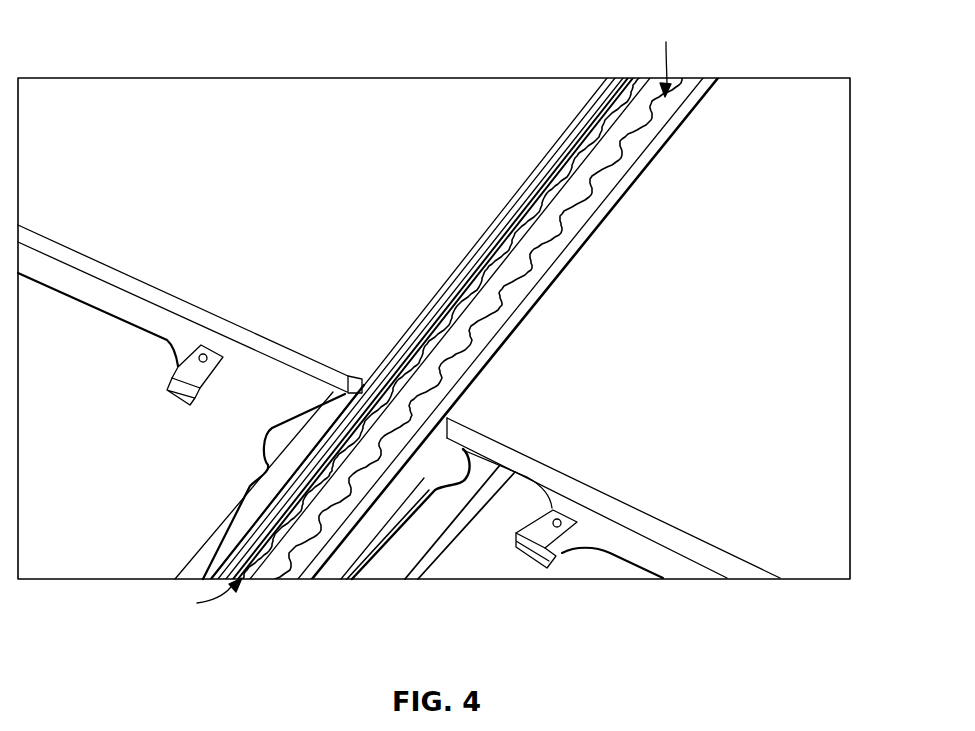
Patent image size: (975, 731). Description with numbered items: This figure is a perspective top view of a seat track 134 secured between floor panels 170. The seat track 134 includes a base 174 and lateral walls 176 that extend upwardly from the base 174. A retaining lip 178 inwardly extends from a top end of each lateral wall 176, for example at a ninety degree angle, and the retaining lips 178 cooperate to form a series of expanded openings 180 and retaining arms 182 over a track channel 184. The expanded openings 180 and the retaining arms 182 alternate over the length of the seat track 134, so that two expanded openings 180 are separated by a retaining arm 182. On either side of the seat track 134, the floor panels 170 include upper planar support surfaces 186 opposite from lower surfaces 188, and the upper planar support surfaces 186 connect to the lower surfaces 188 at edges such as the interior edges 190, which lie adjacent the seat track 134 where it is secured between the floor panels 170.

The seat track 134 is at (497, 260).
The floor panels 170 is at (443, 93).
The base 174 is at (430, 533).
The lateral walls 176 is at (328, 445).
The retaining lip 178 is at (238, 558).
The expanded openings 180 is at (266, 553).
The retaining arms 182 is at (298, 483).
The track channel 184 is at (418, 316).
The upper planar support surfaces 186 is at (517, 103).
The lower surfaces 188 is at (263, 357).
The interior edges 190 is at (609, 93).